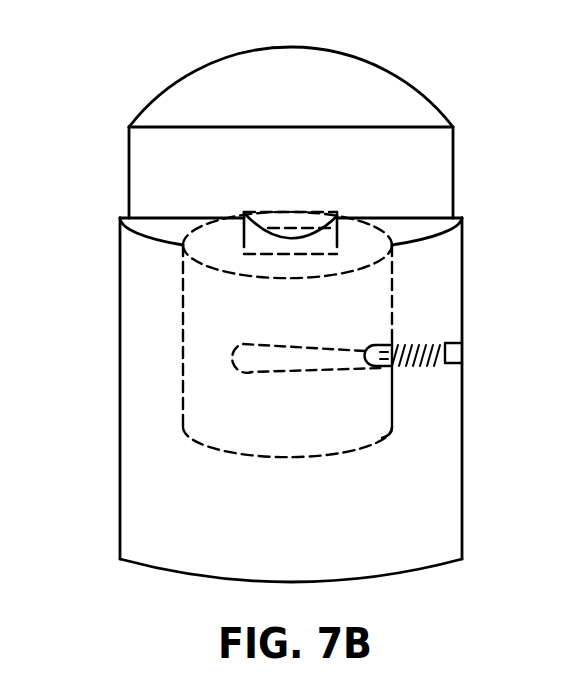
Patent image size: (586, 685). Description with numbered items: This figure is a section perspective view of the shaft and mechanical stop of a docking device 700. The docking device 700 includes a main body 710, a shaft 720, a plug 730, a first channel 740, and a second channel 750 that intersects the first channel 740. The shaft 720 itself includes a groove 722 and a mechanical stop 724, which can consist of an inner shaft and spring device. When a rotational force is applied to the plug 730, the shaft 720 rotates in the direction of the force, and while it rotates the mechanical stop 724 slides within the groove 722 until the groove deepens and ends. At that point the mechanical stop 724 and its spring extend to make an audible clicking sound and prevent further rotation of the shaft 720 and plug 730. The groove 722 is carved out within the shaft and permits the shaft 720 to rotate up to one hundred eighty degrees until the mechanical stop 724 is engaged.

The docking device 700 is at (216, 62).
The main body 710 is at (163, 325).
The shaft 720 is at (223, 413).
The groove 722 is at (290, 363).
The mechanical stop 724 is at (402, 370).
The plug 730 is at (272, 240).
The first channel 740 is at (418, 161).
The second channel 750 is at (295, 225).